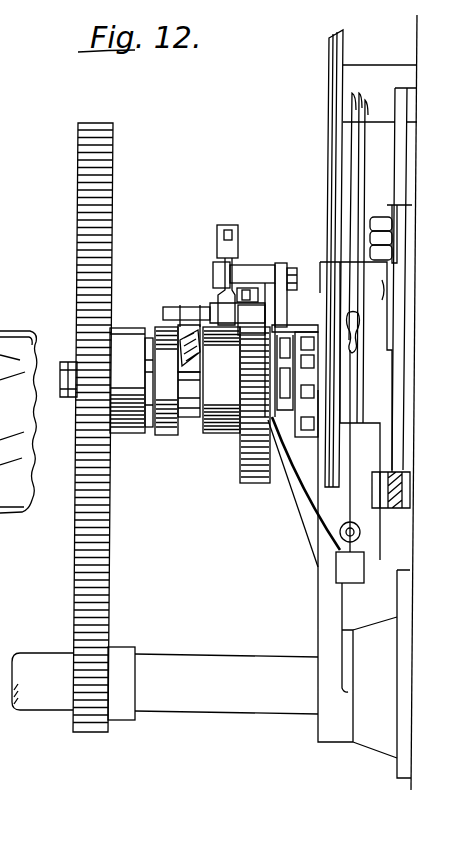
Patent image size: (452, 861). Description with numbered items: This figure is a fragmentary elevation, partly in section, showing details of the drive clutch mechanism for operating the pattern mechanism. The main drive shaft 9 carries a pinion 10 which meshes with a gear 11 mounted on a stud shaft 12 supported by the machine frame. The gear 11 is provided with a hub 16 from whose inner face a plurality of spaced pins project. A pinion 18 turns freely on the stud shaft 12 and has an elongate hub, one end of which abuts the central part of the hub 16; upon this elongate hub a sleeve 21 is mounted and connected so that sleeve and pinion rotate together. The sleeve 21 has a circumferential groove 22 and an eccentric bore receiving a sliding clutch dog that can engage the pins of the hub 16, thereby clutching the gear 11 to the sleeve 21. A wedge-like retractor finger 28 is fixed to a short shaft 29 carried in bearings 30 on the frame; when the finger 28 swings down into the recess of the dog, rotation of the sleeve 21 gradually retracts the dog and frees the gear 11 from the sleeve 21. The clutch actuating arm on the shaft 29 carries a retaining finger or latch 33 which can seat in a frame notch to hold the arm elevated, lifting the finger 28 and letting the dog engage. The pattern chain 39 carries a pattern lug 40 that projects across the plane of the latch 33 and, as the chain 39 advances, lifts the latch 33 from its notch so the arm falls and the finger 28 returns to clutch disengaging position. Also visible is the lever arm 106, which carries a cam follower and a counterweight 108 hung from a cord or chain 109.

The drive shaft 9 is at (203, 660).
The pinion 10 is at (95, 660).
The gear 11 is at (95, 590).
The stud shaft 12 is at (195, 405).
The hub 16 is at (113, 330).
The pinion 18 is at (252, 383).
The sleeve 21 is at (217, 430).
The circumferential groove 22 is at (183, 430).
The retractor finger 28 is at (183, 327).
The short shaft 29 is at (225, 300).
The bearings 30 is at (268, 310).
The retaining finger or latch 33 is at (293, 292).
The chain 39 is at (292, 468).
The pattern lug 40 is at (292, 336).
The arm 106 is at (356, 150).
The counterweight 108 is at (347, 565).
The cord or chain 109 is at (350, 503).